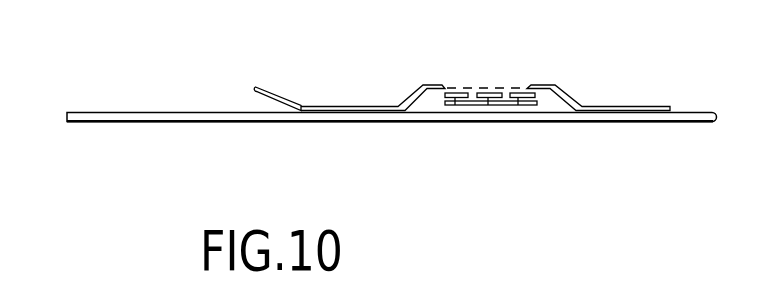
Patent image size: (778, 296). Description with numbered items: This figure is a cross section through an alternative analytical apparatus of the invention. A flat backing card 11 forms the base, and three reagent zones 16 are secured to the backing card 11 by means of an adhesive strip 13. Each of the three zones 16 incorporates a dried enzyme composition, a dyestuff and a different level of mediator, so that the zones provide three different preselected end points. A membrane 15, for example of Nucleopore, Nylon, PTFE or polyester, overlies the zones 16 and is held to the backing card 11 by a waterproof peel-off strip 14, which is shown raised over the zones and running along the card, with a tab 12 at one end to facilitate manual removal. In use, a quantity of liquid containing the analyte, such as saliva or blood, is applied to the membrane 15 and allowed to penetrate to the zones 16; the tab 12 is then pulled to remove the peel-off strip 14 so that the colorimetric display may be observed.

The backing card 11 is at (115, 121).
The tab 12 is at (260, 93).
The adhesive strip 13 is at (522, 102).
The waterproof peel-off strip 14 is at (625, 105).
The membrane 15 is at (501, 87).
The reagent zones 16 is at (518, 98).